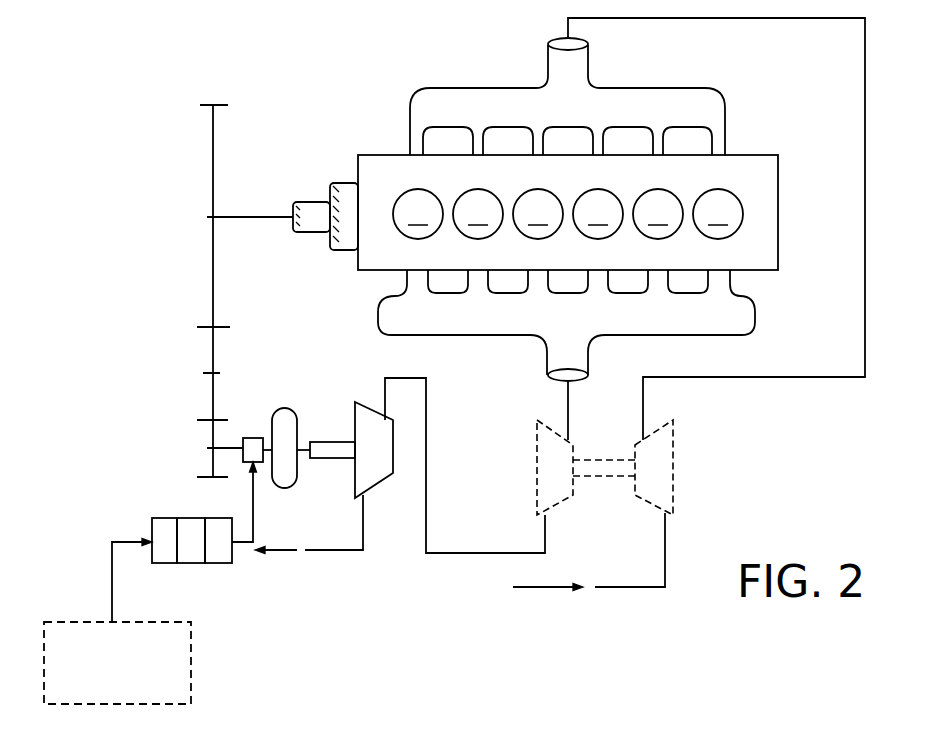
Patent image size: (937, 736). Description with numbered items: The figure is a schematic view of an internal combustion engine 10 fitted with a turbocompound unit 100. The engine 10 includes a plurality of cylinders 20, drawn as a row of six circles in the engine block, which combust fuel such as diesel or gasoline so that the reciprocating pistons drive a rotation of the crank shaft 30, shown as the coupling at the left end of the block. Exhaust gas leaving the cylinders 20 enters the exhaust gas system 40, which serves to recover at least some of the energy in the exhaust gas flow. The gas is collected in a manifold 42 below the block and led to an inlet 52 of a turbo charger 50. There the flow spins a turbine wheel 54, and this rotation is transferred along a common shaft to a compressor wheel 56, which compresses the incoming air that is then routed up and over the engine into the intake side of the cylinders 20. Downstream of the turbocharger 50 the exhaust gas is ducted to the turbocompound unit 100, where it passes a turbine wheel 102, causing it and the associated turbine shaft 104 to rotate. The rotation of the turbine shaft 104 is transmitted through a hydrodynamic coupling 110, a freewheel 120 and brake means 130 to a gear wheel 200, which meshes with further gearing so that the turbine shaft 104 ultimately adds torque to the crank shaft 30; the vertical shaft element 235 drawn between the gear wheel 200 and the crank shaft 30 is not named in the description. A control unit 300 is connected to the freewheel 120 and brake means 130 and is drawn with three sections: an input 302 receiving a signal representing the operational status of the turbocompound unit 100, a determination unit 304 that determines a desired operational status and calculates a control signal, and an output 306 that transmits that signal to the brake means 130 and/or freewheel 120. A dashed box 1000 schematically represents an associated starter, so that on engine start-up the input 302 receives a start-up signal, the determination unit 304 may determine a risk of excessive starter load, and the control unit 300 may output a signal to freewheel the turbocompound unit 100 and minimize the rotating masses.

The internal combustion engine 10 is at (345, 44).
The cylinders 20 is at (568, 214).
The crank shaft 30 is at (263, 217).
The exhaust gas system 40 is at (752, 393).
The manifold 42 is at (740, 310).
The turbo charger 50 is at (617, 515).
The inlet 52 is at (565, 395).
The turbine wheel 54 is at (548, 470).
The compressor wheel 56 is at (672, 466).
The turbocompound unit 100 is at (323, 485).
The turbine wheel 102 is at (362, 398).
The turbine shaft 104 is at (330, 443).
The hydrodynamic coupling 110 is at (285, 408).
The freewheel 120 is at (301, 374).
The brake means 130 is at (257, 438).
The gear wheel 200 is at (198, 477).
The drive shaft 235 is at (186, 363).
The control unit 300 is at (252, 578).
The input 302 is at (170, 515).
The determination unit 304 is at (193, 564).
The output 306 is at (223, 564).
The starter (e.g.) 1000 is at (191, 680).